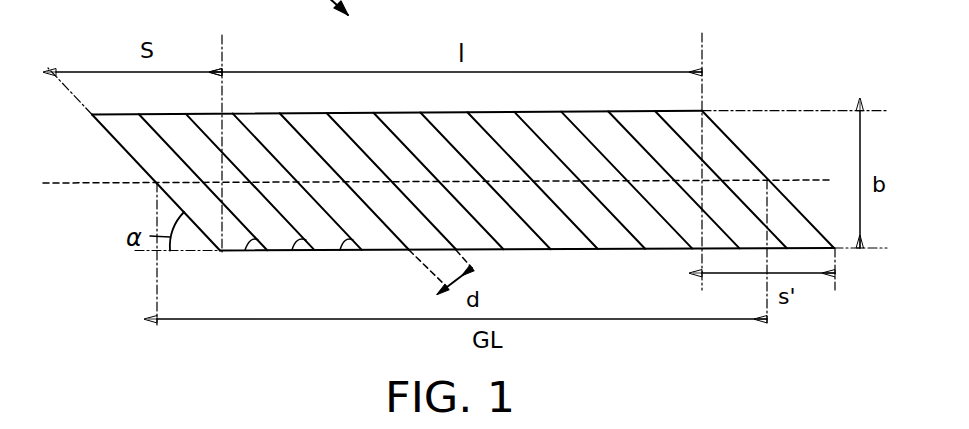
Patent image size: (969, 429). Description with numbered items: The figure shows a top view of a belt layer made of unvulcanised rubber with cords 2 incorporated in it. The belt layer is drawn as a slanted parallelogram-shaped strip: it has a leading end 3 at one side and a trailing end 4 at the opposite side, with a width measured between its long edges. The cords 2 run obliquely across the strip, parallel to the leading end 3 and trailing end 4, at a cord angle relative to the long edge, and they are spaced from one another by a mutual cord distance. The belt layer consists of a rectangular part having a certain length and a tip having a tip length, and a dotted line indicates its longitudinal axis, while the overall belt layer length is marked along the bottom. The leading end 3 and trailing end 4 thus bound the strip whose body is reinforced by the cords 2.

The cords 2 is at (337, 252).
The leading end 3 is at (121, 146).
The trailing end 4 is at (750, 144).